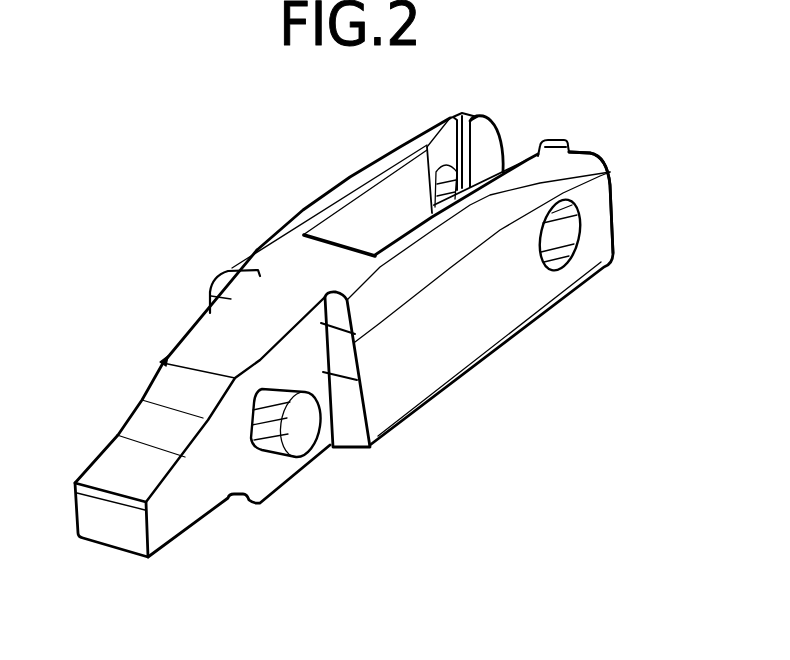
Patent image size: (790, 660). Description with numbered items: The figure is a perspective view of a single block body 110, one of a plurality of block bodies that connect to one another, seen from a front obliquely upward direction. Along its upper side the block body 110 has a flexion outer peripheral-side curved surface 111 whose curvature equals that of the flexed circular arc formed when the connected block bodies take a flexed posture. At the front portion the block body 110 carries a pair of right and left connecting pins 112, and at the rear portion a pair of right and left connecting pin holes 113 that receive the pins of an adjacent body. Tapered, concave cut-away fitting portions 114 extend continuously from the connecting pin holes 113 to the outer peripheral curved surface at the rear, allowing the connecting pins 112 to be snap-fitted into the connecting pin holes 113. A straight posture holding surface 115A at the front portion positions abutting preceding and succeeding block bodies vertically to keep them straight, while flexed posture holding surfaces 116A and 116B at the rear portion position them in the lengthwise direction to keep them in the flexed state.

The block body 110 is at (162, 137).
The flexion outer peripheral-side curved surface 111 is at (290, 260).
The connecting pin 112 is at (162, 361).
The connecting pin hole 113 is at (573, 243).
The cut-away fitting portion 114 is at (443, 138).
The straight posture holding surface 115A is at (184, 536).
The flexed posture holding surface 116A is at (372, 443).
The flexed posture holding surface 116B is at (518, 116).